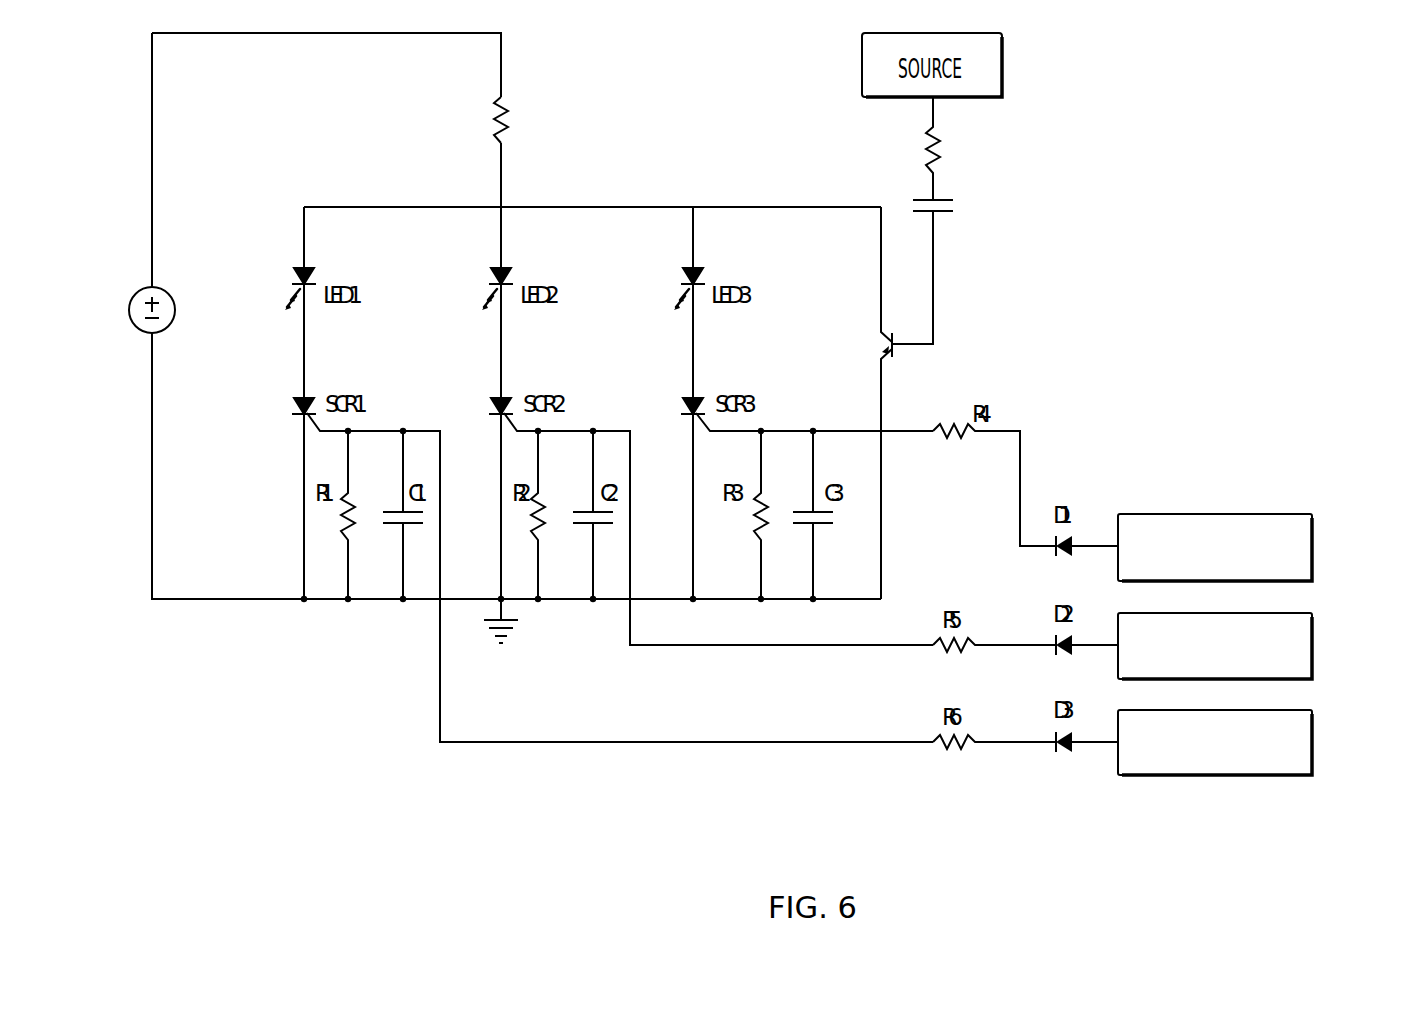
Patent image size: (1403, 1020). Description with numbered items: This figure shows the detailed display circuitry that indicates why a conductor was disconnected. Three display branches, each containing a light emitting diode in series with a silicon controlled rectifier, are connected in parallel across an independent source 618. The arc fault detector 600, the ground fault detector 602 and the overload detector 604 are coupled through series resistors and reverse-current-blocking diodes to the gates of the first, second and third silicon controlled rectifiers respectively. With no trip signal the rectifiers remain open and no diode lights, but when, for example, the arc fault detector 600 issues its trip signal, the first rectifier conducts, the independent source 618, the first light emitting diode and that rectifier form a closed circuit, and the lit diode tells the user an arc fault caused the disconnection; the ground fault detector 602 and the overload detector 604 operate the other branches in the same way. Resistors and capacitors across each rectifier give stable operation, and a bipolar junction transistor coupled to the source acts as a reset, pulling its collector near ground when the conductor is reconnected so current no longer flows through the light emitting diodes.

The independent source 618 is at (129, 310).
The overload detector 604 is at (1312, 546).
The ground fault detector 602 is at (1312, 645).
The arc fault detector 600 is at (1312, 742).